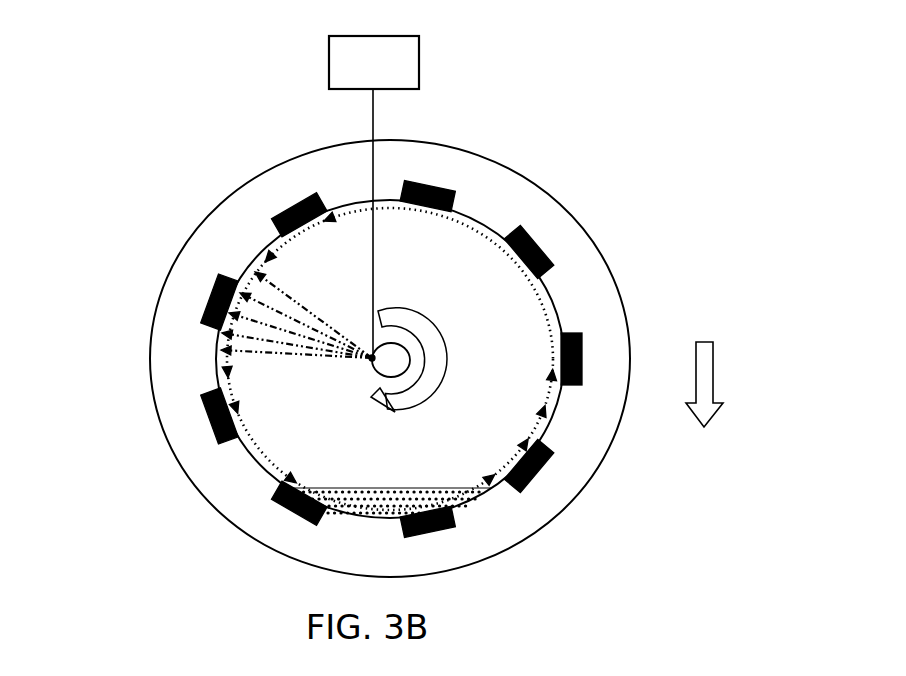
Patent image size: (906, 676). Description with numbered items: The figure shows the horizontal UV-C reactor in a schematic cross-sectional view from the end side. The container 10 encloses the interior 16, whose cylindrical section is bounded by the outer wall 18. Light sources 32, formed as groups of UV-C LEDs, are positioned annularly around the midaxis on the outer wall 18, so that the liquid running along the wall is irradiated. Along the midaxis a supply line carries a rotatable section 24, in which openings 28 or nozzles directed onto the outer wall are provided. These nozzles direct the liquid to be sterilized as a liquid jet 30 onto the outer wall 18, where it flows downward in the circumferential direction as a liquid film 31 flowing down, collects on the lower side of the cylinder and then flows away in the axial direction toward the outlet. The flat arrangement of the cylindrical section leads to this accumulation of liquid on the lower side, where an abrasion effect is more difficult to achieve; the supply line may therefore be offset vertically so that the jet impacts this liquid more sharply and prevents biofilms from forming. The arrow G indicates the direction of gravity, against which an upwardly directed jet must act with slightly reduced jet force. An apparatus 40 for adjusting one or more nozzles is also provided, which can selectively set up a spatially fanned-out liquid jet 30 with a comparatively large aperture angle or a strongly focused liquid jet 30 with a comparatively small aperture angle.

The container 10 is at (204, 222).
The interior 16 is at (355, 232).
The outer wall of the interior 18 is at (224, 392).
The rotatable section of the supply line 24 is at (410, 356).
The opening for liquid jet, nozzle 28 is at (358, 366).
The liquid jet 30 is at (323, 358).
The liquid film flowing down 31 is at (527, 277).
The light sources, UV-C LEDs 32 is at (457, 201).
The apparatus for adjusting the opening/nozzle 40 is at (391, 73).
The gravity G is at (713, 378).